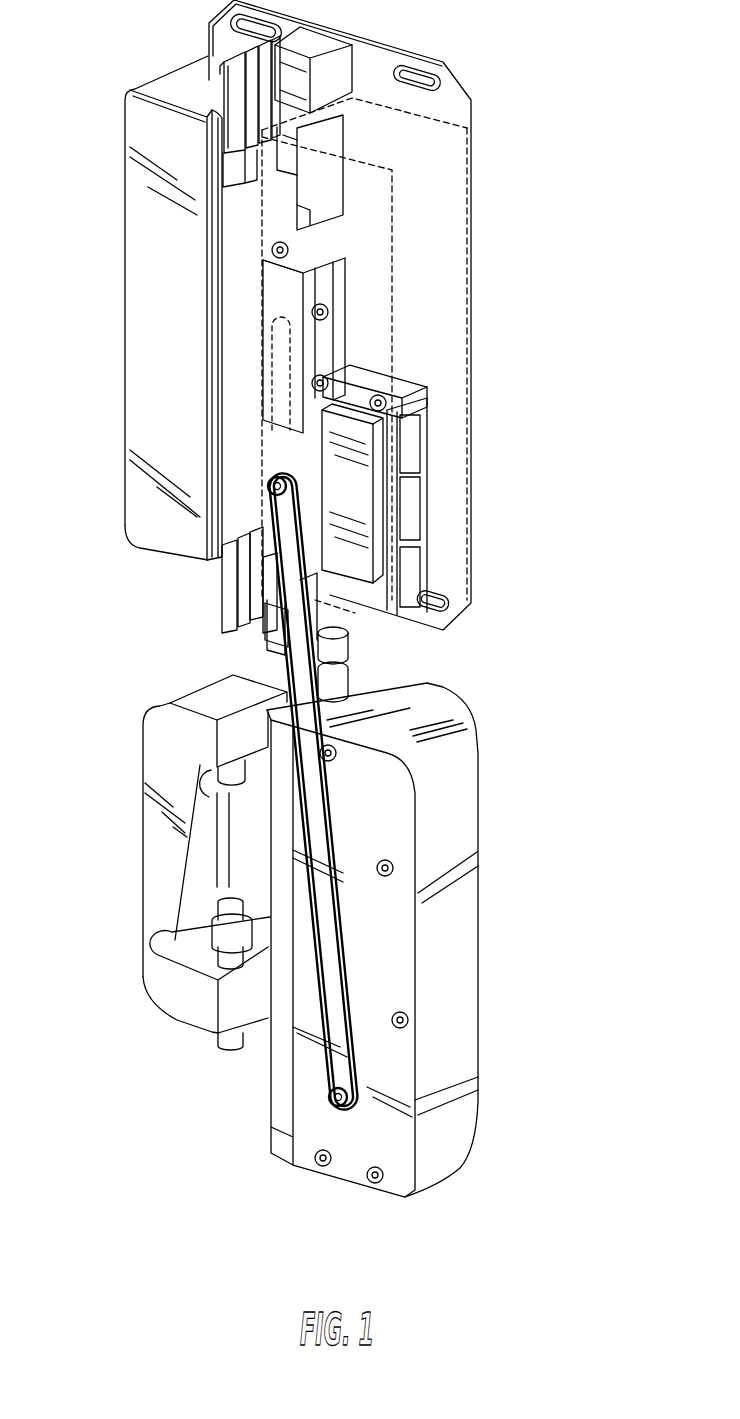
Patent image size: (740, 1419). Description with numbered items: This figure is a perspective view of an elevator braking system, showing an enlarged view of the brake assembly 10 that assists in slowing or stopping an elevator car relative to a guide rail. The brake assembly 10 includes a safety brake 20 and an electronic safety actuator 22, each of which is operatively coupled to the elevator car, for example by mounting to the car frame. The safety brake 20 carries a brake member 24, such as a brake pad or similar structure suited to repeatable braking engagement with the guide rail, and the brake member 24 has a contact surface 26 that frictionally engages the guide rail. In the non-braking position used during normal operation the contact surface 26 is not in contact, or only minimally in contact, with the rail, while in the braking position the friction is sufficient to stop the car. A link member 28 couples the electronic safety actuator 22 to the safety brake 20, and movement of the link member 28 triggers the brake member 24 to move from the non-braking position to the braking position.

The brake assembly 10 is at (552, 0).
The safety brake 20 is at (106, 802).
The electronic safety actuator 22 is at (437, 300).
The brake member 24 is at (198, 846).
The contact surface 26 is at (250, 887).
The link member 28 is at (267, 643).